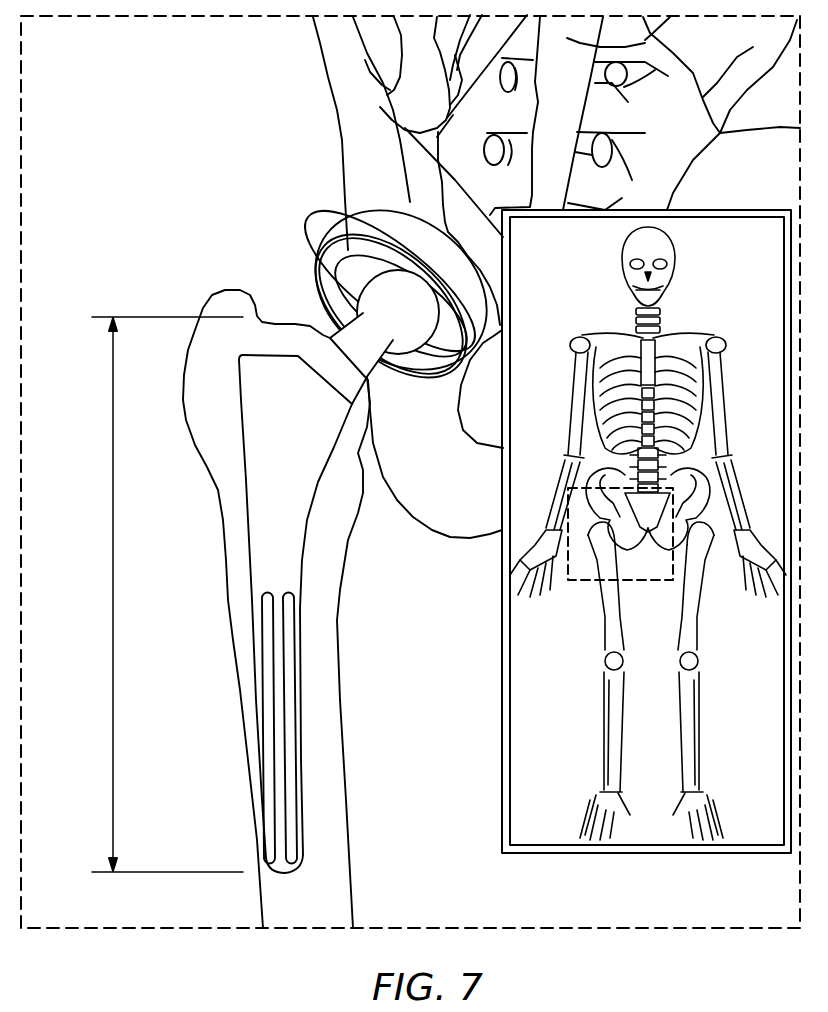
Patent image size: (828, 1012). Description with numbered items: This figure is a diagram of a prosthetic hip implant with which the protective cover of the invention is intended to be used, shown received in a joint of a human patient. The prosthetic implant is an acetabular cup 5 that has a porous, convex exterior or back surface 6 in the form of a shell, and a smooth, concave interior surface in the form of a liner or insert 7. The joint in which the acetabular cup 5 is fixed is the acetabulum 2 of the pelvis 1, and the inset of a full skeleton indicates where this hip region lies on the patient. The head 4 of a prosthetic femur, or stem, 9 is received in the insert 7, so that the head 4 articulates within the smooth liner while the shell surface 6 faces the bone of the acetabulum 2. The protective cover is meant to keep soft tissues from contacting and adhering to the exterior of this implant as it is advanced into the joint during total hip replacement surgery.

The pelvis 1 is at (431, 541).
The acetabulum 2 is at (328, 244).
The head 4 is at (366, 289).
The acetabular cup 5 is at (353, 278).
The back surface 6 is at (372, 232).
The insert 7 is at (347, 249).
The prosthetic femur 9 is at (112, 593).